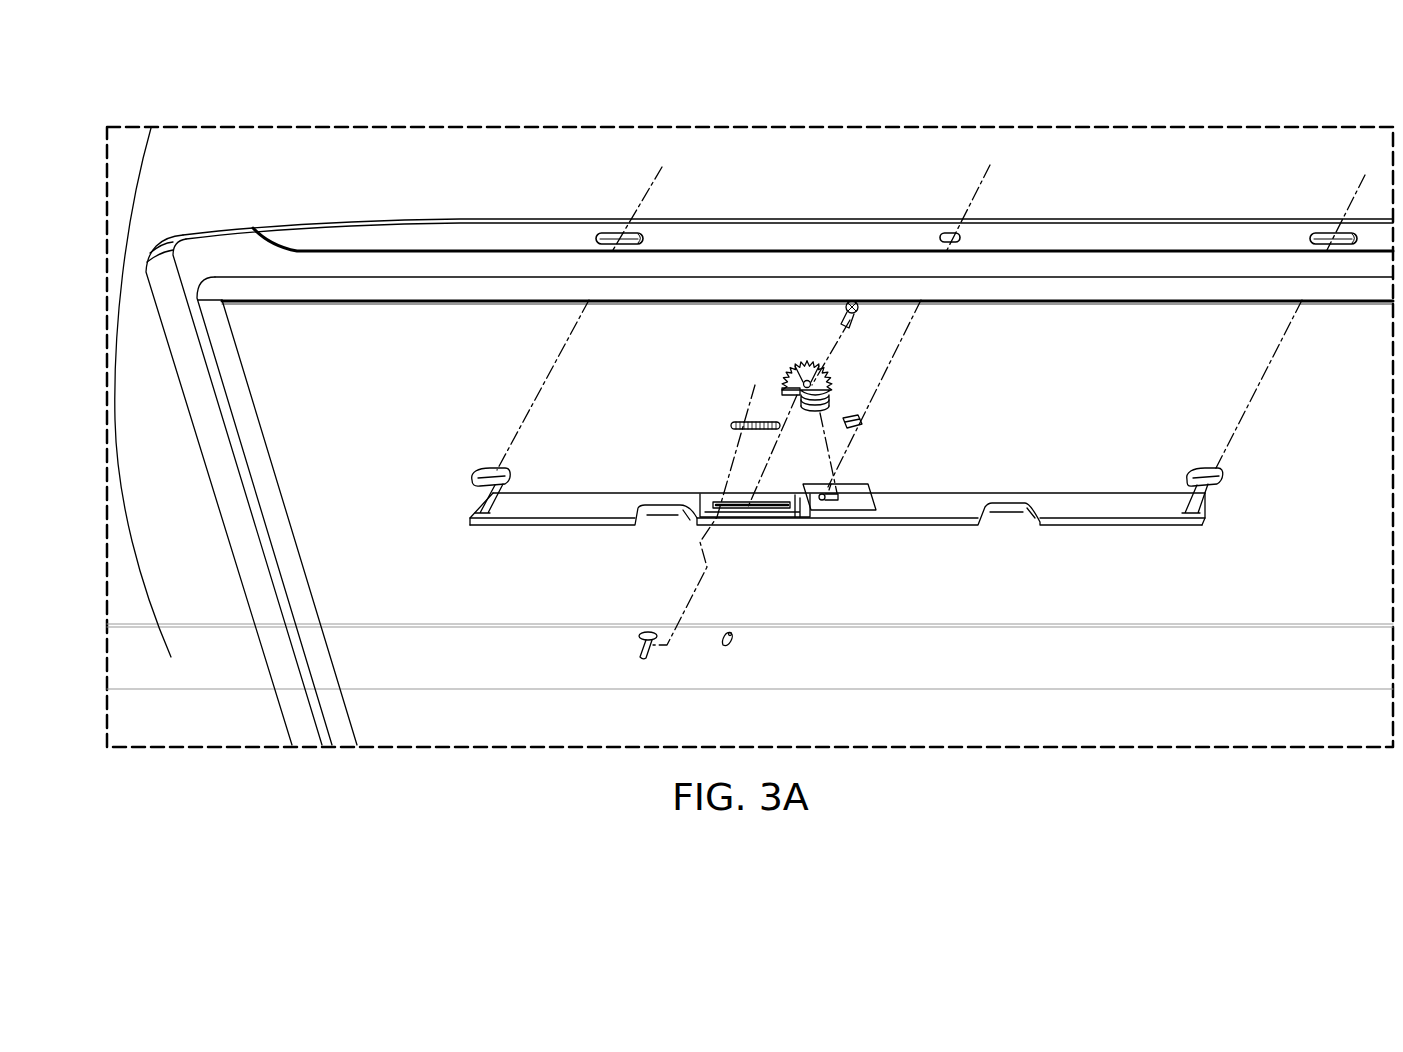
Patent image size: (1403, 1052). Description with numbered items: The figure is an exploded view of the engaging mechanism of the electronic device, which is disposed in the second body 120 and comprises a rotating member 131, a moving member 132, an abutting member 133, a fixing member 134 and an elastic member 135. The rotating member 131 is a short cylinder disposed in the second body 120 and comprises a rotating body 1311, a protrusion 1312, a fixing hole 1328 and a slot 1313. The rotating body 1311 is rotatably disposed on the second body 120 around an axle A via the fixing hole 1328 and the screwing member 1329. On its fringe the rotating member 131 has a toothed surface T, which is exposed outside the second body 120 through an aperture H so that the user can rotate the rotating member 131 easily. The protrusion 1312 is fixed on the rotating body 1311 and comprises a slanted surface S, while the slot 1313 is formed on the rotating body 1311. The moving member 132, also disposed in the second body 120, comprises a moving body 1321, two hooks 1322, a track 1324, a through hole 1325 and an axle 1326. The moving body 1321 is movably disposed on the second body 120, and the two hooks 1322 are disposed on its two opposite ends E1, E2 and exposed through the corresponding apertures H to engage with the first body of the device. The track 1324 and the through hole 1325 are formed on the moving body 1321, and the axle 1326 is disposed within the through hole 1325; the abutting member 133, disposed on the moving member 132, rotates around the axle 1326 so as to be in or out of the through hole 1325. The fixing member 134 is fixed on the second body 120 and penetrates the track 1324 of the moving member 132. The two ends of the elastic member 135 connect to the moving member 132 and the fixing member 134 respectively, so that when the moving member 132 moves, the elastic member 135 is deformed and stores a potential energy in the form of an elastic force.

The second body 120 is at (233, 250).
The aperture H is at (611, 228).
The rotating member 131 is at (842, 57).
The rotating body 1311 is at (795, 372).
The slot 1313 is at (808, 372).
The protrusion 1312 is at (825, 375).
The fixing hole 1328 is at (822, 380).
The screwing member 1329 is at (860, 312).
The toothed surface T is at (795, 376).
The slanted surface S is at (830, 400).
The abutting member 133 is at (862, 424).
The elastic member 135 is at (733, 425).
The through hole 1325 is at (838, 492).
The axle 1326 is at (840, 512).
The moving member 132 is at (1055, 489).
The moving body 1321 is at (1094, 525).
The hooks 1322 is at (487, 467).
The end E1 is at (527, 503).
The end E2 is at (1128, 500).
The track 1324 is at (712, 499).
The fixing member 134 is at (650, 632).
The axle A is at (733, 525).